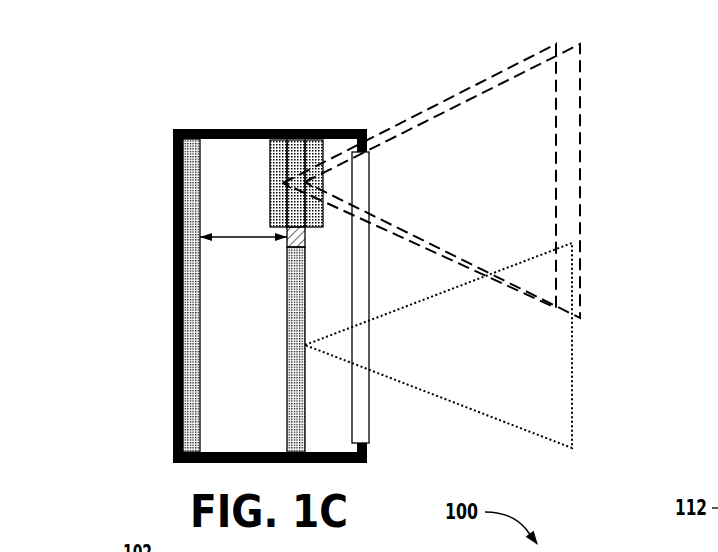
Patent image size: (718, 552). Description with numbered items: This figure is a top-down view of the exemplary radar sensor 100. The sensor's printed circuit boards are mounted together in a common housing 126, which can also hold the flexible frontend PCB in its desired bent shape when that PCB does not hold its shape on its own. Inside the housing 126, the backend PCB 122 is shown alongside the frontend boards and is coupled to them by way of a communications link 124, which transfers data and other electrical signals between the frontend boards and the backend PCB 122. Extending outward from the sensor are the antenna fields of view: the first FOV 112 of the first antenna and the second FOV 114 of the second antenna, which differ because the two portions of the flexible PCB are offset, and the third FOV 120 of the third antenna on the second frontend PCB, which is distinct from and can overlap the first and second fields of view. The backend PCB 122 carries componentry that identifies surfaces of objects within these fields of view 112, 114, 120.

The radar sensor 100 is at (110, 117).
The first FOV 112 is at (556, 222).
The second FOV 114 is at (580, 117).
The third FOV 120 is at (572, 407).
The backend PCB 122 is at (197, 207).
The communications link 124 is at (230, 237).
The housing 126 is at (173, 373).